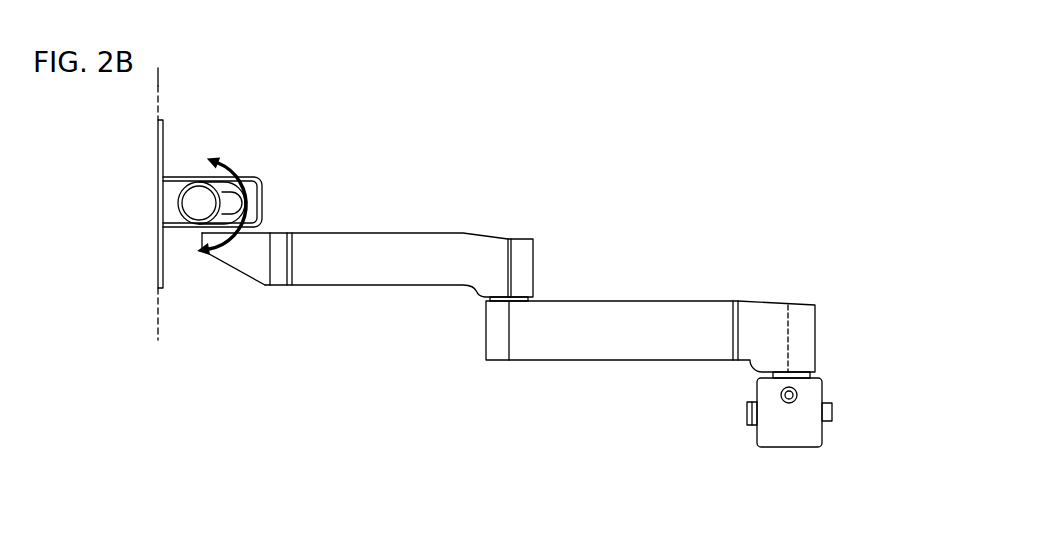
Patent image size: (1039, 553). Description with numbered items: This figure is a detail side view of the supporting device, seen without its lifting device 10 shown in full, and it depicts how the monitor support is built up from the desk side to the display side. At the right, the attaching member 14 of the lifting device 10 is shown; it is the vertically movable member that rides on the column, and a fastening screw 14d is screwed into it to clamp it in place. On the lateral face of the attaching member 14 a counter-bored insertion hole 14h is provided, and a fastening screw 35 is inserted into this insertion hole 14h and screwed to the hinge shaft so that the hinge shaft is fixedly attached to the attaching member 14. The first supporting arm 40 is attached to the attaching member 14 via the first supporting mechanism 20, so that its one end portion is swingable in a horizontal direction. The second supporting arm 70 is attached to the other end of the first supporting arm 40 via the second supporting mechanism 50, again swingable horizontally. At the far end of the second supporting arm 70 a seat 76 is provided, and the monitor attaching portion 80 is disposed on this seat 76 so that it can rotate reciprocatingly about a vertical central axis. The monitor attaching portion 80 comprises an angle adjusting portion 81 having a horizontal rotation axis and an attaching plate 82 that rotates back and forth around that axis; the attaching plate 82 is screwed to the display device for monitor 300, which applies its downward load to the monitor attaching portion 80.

The display device for monitor 300 is at (163, 82).
The attaching plate 82 is at (163, 145).
The angle adjusting portion 81 is at (193, 203).
The monitor attaching portion 80 is at (268, 183).
The seat 76 is at (202, 247).
The second supporting arm 70 is at (363, 248).
The second supporting mechanism 50 is at (478, 303).
The first supporting arm 40 is at (588, 327).
The first supporting mechanism 20 is at (735, 383).
The lifting device 10 is at (828, 390).
The attaching member 14 is at (827, 450).
The fastening screw 14d is at (833, 413).
The insertion hole 14h is at (787, 401).
The fastening screw 35 is at (793, 402).